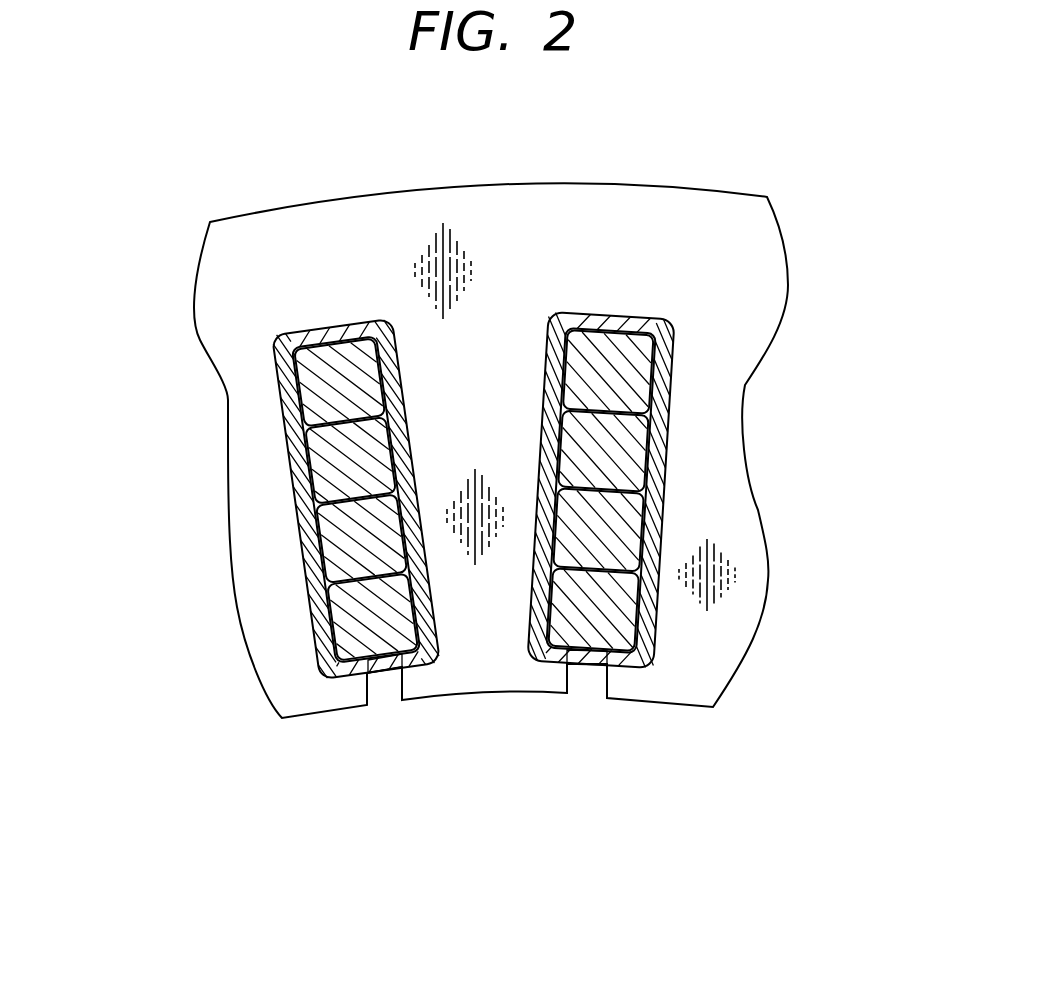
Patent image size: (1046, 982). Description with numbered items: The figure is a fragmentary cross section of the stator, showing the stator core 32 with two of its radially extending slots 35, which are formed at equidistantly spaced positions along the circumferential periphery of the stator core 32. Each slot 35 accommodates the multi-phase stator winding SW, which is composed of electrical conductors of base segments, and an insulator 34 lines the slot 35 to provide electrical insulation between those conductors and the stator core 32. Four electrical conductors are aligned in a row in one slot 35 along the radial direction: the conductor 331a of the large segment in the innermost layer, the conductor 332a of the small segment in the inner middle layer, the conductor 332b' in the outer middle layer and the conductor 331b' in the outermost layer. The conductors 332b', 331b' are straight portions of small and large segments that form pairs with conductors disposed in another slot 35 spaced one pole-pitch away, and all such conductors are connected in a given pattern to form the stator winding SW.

The stator core 32 is at (300, 274).
The insulator 34 is at (660, 318).
The electrical conductor of the large segment 331a is at (607, 625).
The electrical conductor of the large segment 331b' is at (748, 372).
The electrical conductor of the small segment 332a is at (612, 538).
The electrical conductor of the small segment 332b' is at (745, 451).
The slot 35 is at (368, 697).
The multi-phase stator winding SW is at (611, 318).